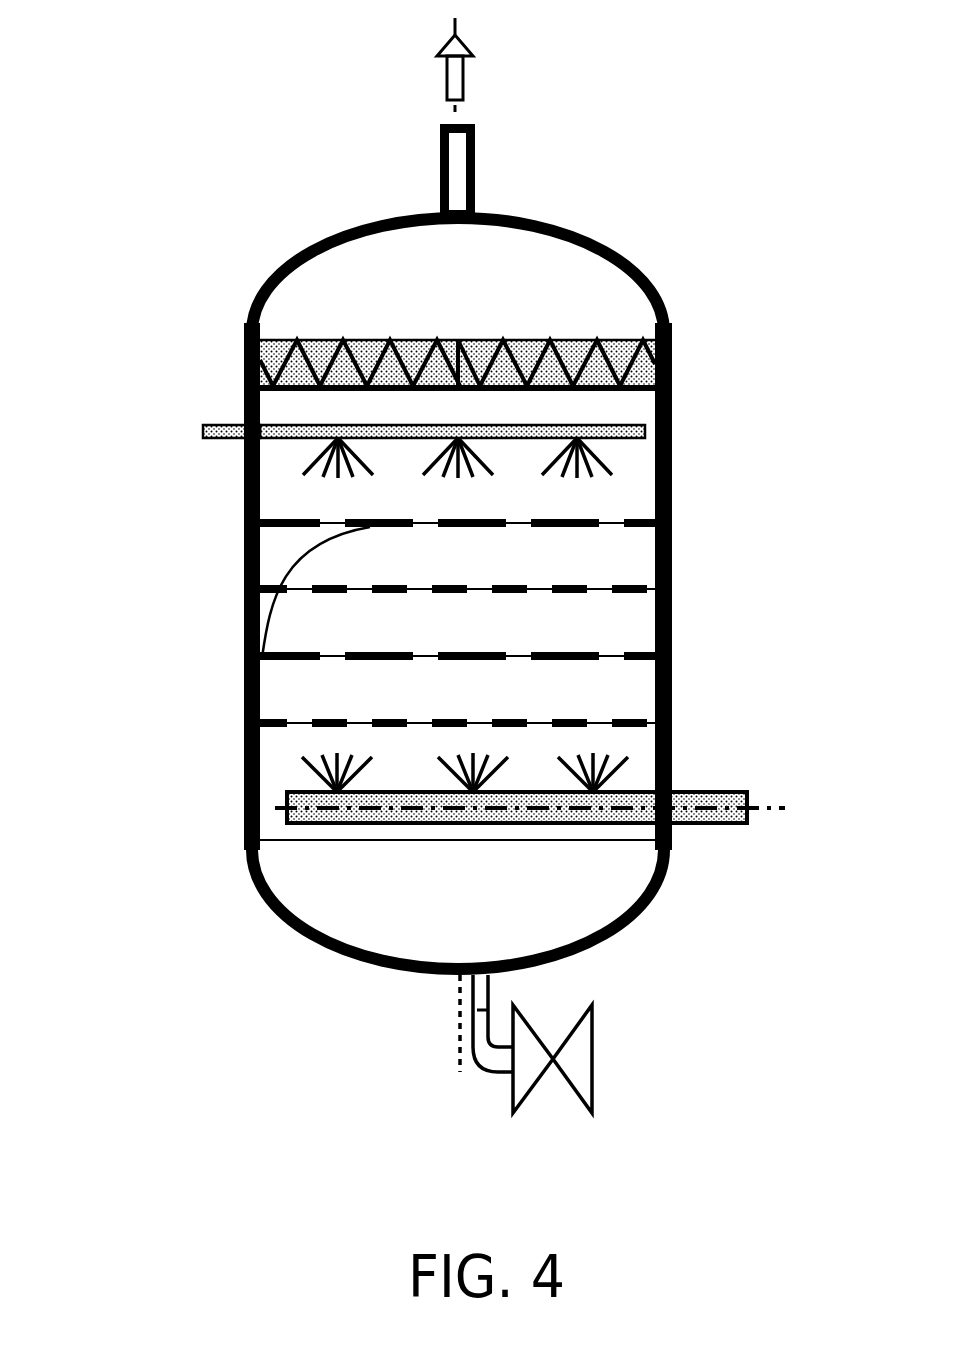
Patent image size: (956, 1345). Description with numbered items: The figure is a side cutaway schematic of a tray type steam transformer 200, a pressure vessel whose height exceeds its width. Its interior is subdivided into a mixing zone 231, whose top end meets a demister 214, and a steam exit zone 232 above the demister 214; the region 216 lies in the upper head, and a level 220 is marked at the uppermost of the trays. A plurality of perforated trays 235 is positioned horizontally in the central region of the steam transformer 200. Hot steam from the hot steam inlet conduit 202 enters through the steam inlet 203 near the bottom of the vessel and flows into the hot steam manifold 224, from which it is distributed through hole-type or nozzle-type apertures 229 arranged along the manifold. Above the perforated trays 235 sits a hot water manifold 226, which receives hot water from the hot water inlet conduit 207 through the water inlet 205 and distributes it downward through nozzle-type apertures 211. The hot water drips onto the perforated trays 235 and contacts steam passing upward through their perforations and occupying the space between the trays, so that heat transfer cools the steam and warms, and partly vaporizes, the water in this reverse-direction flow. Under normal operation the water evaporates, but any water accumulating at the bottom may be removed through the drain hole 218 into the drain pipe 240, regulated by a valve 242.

The steam transformer 200 is at (247, 272).
The hot steam inlet conduit 202 is at (748, 822).
The steam inlet 203 is at (672, 852).
The water inlet 205 is at (244, 422).
The hot water inlet conduit 207 is at (203, 440).
The nozzle-type apertures 211 is at (457, 472).
The demister 214 is at (243, 345).
The gas outlet region 216 is at (509, 283).
The drain hole 218 is at (478, 965).
The upper tray 220 is at (244, 513).
The hot steam manifold 224 is at (520, 810).
The hot water manifold 226 is at (380, 436).
The hole-type or nozzle-type apertures 229 is at (465, 768).
The mixing zone 231 is at (492, 640).
The steam exit zone 232 is at (415, 313).
The perforated trays 235 is at (258, 660).
The drain pipe 240 is at (489, 1050).
The valve 242 is at (592, 1075).